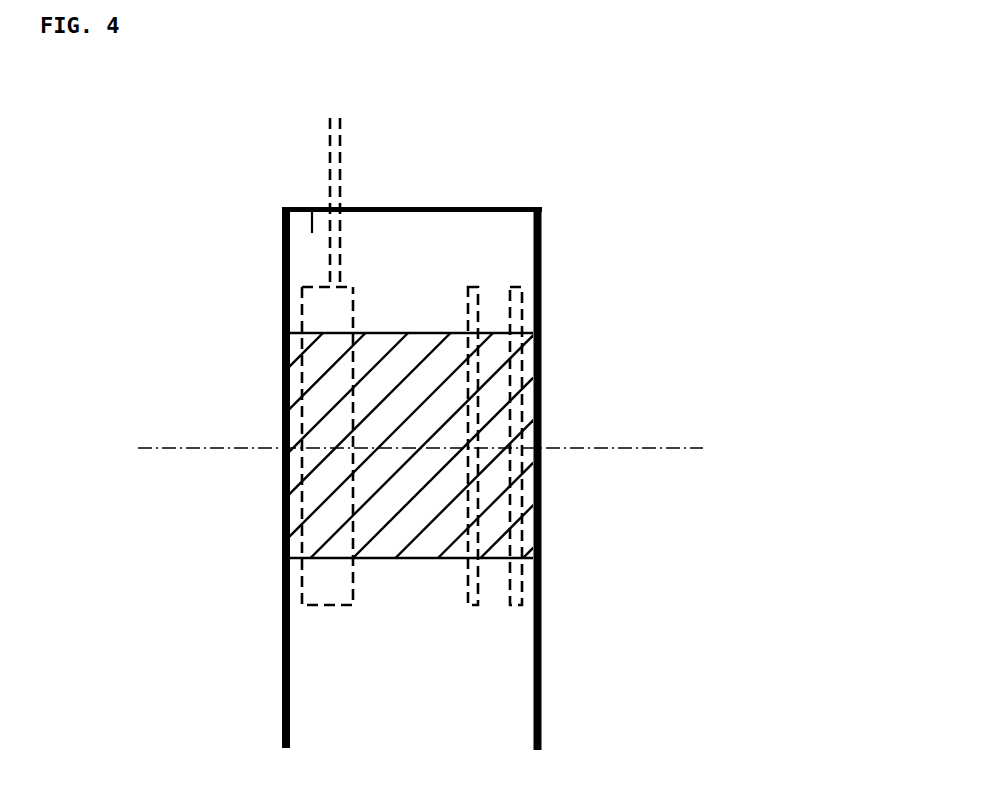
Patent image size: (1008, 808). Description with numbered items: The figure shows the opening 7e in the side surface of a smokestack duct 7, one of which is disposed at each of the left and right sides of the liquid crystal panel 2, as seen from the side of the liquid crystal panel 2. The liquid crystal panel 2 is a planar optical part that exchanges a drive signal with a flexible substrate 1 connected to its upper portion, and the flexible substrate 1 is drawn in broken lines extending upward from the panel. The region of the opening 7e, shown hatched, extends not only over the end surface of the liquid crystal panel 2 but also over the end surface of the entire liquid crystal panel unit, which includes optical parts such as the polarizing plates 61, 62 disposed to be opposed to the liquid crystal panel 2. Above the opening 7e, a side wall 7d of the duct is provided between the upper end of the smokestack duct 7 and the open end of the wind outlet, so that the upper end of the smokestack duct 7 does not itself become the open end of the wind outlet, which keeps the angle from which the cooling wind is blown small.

The flexible substrate 1 is at (342, 192).
The liquid crystal panel 2 is at (297, 315).
The smokestack duct 7 is at (282, 655).
The side wall 7d is at (312, 209).
The opening 7e is at (282, 532).
The polarizing plate 61 is at (473, 287).
The polarizing plate 62 is at (520, 313).